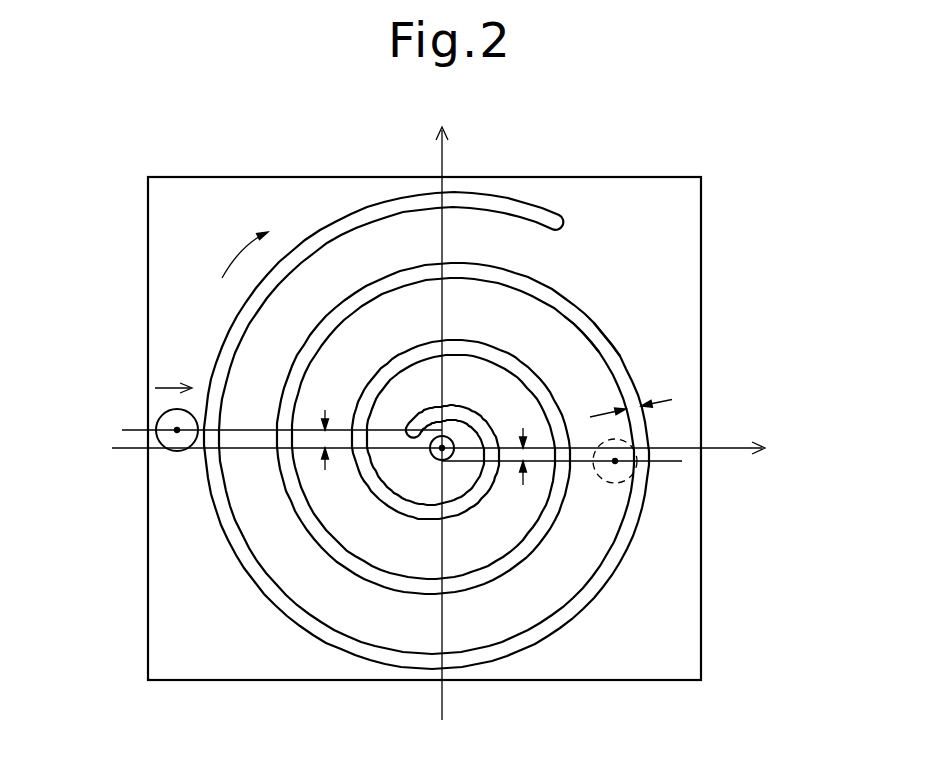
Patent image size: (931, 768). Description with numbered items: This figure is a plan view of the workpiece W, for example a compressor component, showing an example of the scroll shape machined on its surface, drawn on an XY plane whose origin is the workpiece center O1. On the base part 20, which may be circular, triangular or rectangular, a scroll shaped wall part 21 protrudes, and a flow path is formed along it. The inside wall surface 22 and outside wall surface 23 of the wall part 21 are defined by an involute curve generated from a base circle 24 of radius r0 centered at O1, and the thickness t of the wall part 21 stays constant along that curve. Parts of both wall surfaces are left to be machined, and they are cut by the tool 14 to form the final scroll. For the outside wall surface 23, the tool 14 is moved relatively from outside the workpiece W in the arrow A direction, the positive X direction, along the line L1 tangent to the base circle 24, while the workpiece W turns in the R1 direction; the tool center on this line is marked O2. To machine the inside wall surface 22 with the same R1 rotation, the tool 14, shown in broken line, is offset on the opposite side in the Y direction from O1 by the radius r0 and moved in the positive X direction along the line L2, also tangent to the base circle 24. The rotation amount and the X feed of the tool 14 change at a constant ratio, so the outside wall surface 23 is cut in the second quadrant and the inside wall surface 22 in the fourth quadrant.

The tool 14 is at (164, 414).
The base part 20 is at (632, 195).
The wall part 21 is at (600, 300).
The inside wall surface 22 is at (589, 347).
The outside wall surface 23 is at (628, 350).
The base circle 24 is at (452, 434).
The workpiece W is at (709, 216).
The X-axis X is at (450, 450).
The Y-axis Y is at (442, 407).
The line L1 is at (130, 429).
The line L2 is at (663, 461).
The center of rotation O1 is at (439, 451).
The tool center O2 is at (176, 434).
The arrow A direction A is at (173, 374).
The R1 direction R1 is at (238, 249).
The radius of the base circle r0 is at (325, 440).
The thickness of the wall part t is at (631, 394).